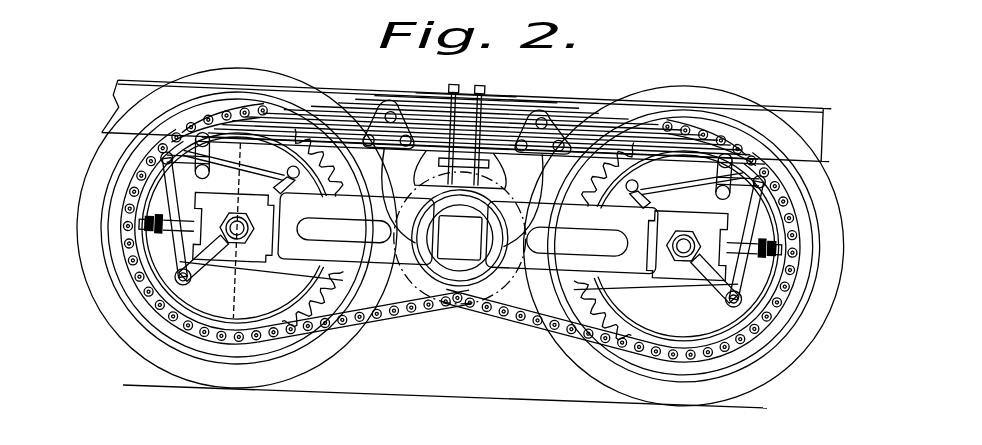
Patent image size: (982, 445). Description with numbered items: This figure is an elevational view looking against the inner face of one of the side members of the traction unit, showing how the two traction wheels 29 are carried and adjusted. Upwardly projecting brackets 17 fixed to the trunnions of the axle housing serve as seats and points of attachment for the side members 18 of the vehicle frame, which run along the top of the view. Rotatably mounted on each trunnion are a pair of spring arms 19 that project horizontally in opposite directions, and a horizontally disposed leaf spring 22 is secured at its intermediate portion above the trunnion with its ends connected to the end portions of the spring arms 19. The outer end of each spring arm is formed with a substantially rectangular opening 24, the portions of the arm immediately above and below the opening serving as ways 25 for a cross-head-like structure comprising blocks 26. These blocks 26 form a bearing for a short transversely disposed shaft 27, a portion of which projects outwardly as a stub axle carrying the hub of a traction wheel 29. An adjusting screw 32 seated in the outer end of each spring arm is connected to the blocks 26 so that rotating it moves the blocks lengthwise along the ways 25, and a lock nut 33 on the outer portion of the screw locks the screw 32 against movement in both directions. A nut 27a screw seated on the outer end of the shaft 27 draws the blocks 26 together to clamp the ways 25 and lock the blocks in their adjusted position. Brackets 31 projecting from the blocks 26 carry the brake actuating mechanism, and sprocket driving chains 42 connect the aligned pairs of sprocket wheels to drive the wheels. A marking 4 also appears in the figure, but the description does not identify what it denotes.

The side members of the vehicle frame 18 is at (118, 82).
The leaf spring 22 is at (494, 103).
The brackets 17 is at (412, 84).
The spring arms 19 is at (346, 290).
The rectangular opening 24 is at (270, 227).
The traction wheel 29 is at (252, 57).
The sprocket driving chains 42 is at (415, 353).
The shaft 27 is at (684, 246).
The nut 27a is at (684, 248).
The brackets 31 is at (200, 295).
The blocks 26 is at (200, 199).
The ways 25 is at (262, 256).
The adjusting screw 32 is at (144, 233).
The lock nut 33 is at (170, 268).
The center line 4 is at (228, 323).